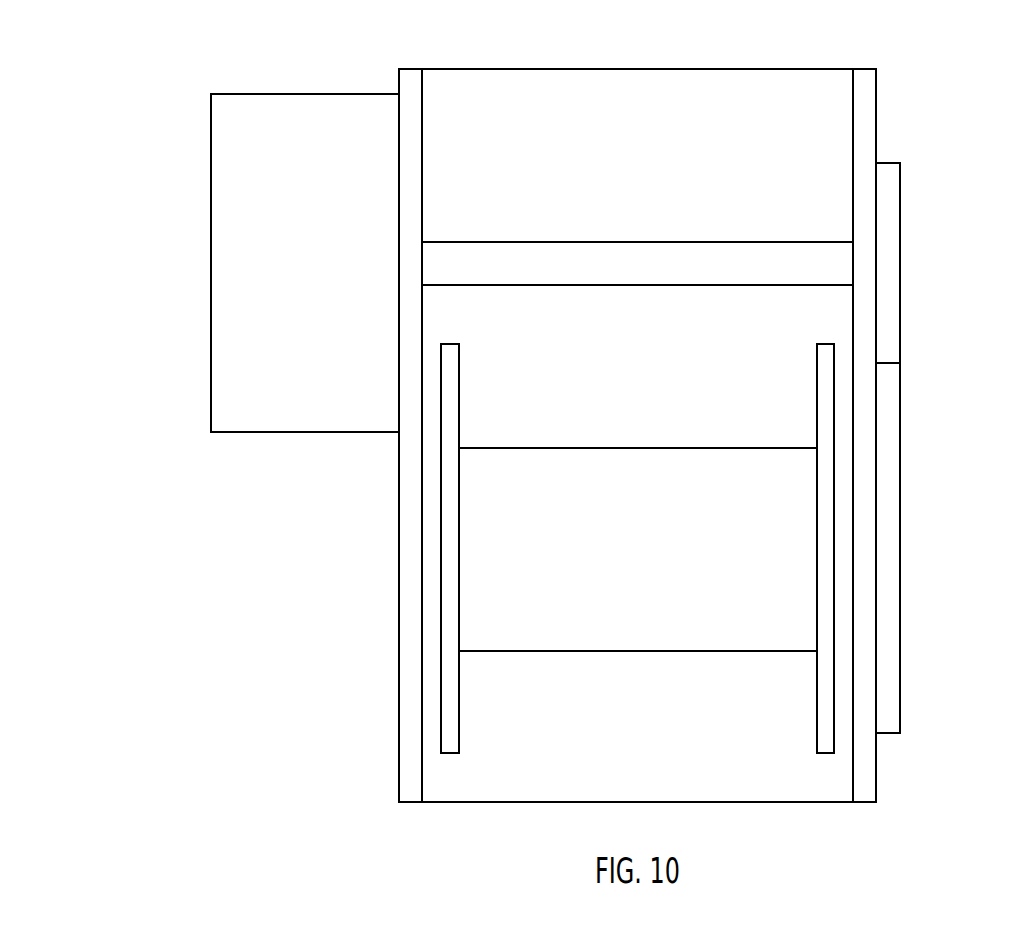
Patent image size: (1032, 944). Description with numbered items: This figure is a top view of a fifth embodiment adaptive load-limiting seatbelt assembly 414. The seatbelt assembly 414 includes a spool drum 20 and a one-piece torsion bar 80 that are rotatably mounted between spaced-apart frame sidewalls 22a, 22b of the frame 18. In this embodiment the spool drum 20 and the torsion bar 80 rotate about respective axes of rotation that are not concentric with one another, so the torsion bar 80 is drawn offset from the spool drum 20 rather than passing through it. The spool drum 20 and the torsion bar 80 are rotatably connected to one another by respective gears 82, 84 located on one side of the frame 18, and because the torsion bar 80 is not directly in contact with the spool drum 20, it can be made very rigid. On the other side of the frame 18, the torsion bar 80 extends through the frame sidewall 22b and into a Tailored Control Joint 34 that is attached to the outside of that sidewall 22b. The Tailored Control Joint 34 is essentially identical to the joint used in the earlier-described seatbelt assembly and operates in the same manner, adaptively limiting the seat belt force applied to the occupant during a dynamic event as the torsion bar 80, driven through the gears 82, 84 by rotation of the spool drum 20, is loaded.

The seatbelt assembly 414 is at (994, 108).
The frame sidewall 22a is at (399, 487).
The frame sidewall 22b is at (876, 117).
The torsion bar 80 is at (692, 242).
The spool drum 20 is at (560, 447).
The Tailored Control Joint (TCJ) 34 is at (198, 258).
The gear 84 is at (900, 310).
The gear 82 is at (900, 447).
The frame 18 is at (759, 788).